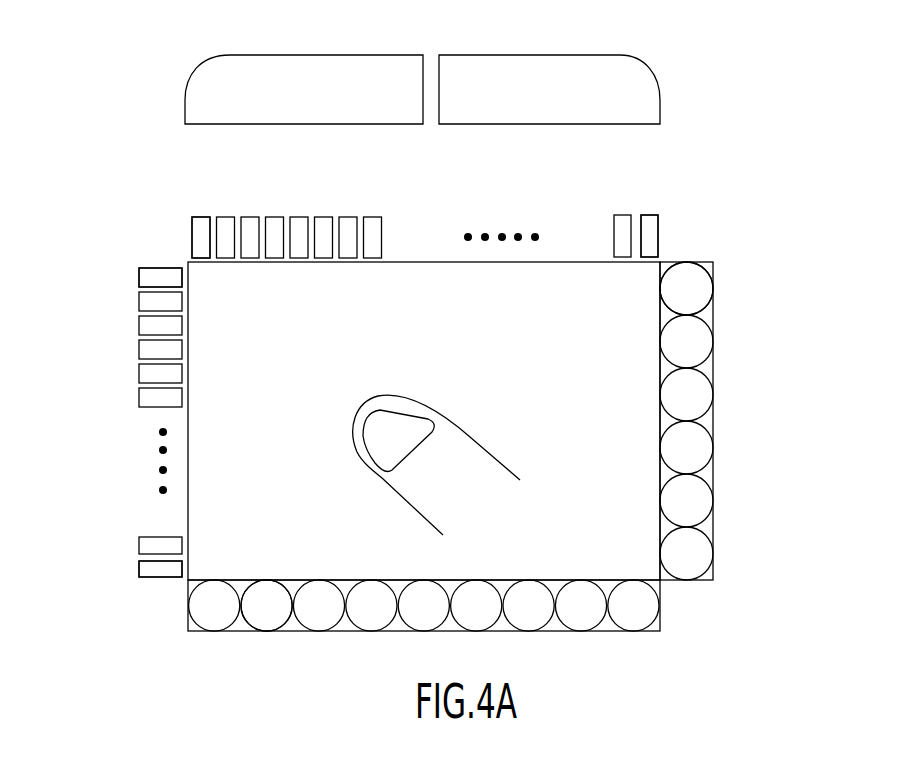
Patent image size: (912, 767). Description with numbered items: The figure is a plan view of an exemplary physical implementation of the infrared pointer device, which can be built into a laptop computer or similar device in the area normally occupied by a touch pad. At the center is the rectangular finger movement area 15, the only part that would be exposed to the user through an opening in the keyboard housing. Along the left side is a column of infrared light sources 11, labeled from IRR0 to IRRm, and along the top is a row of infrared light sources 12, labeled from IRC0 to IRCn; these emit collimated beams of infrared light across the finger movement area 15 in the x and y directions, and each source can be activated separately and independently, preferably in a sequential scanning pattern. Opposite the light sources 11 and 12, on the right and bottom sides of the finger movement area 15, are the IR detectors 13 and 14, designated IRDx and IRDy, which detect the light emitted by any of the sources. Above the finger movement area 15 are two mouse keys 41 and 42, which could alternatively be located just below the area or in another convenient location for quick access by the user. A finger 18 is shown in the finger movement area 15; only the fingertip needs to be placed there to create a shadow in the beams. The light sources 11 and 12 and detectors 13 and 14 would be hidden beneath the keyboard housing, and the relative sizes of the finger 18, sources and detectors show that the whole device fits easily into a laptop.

The mouse key 41 is at (342, 55).
The mouse key 42 is at (508, 55).
The infrared light sources 11 is at (130, 263).
The infrared light sources 12 is at (188, 205).
The IR detector 13 is at (722, 417).
The IR detector 14 is at (424, 645).
The finger movement area 15 is at (638, 302).
The finger 18 is at (429, 480).
The infrared light source column 0 IRC0 is at (190, 220).
The infrared light source column n IRCn is at (660, 226).
The infrared light source row 0 IRR0 is at (140, 266).
The infrared light source row m IRRm is at (165, 581).
The x-direction IR detector IRDx is at (712, 290).
The y-direction IR detector IRDy is at (257, 632).